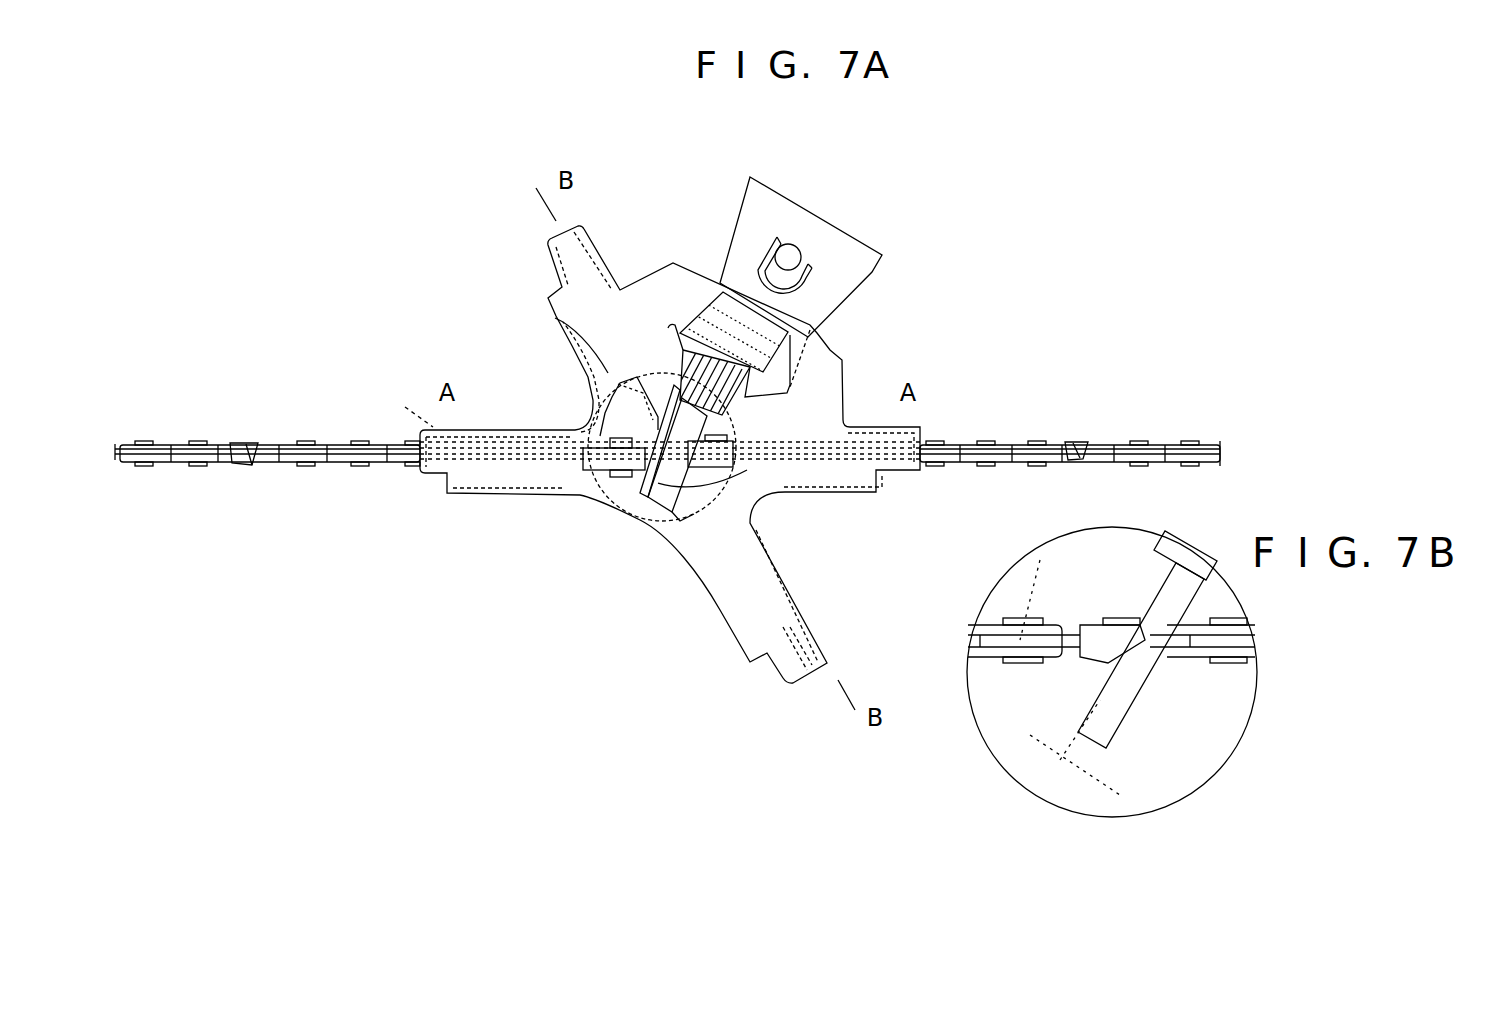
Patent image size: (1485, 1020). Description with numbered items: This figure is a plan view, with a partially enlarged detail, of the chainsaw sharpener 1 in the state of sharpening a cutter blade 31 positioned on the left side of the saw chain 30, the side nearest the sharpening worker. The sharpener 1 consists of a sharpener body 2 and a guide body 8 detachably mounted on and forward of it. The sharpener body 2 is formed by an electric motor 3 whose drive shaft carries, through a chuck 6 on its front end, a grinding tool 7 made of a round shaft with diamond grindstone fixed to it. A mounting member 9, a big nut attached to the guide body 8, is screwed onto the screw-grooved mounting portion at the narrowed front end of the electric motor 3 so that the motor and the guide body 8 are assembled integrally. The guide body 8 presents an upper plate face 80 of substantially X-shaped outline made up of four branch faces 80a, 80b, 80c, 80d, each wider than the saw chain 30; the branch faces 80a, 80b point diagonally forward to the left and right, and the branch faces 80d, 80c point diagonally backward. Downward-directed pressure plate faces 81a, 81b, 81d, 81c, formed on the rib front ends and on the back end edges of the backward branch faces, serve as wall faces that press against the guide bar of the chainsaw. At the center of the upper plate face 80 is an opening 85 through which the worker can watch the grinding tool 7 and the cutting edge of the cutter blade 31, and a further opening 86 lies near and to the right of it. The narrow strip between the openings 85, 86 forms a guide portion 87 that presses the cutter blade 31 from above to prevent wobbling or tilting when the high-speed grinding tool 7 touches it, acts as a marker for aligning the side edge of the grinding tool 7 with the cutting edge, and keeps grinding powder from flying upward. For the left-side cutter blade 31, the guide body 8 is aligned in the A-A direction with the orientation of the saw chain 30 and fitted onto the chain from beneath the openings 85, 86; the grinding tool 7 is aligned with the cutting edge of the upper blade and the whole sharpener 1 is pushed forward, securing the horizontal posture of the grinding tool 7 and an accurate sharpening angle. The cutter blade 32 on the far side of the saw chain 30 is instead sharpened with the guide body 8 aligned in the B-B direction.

In FIG. 7A, the chainsaw sharpener 1 is at (1052, 262).
In FIG. 7A, the sharpener body 2 is at (882, 258).
In FIG. 7A, the electric motor 3 is at (922, 310).
In FIG. 7A, the chuck 6 is at (693, 367).
In FIG. 7A, the grinding tool 7 is at (750, 503).
In FIG. 7B, the grinding tool 7 is at (1143, 690).
In FIG. 7A, the guide body 8 is at (350, 262).
In FIG. 7A, the mounting member 9 is at (702, 312).
In FIG. 7A, the saw chain 30 is at (1132, 440).
In FIG. 7B, the saw chain 30 is at (1111, 640).
In FIG. 7A, the cutter blade 31 is at (238, 440).
In FIG. 7B, the cutter blade 31 is at (1103, 638).
In FIG. 7A, the cutter blade 32 is at (445, 477).
In FIG. 7A, the upper plate face 80 is at (553, 314).
In FIG. 7A, the branch face 80a is at (540, 472).
In FIG. 7A, the branch face 80b is at (748, 615).
In FIG. 7A, the branch face 80c is at (830, 473).
In FIG. 7A, the branch face 80d is at (563, 288).
In FIG. 7A, the pressure plate face 81a is at (432, 426).
In FIG. 7A, the pressure plate face 81b is at (830, 650).
In FIG. 7A, the pressure plate face 81c is at (915, 425).
In FIG. 7A, the pressure plate face 81d is at (575, 245).
In FIG. 7A, the opening 85 is at (683, 500).
In FIG. 7A, the opening 86 is at (600, 452).
In FIG. 7A, the guide portion 87 is at (660, 480).
In FIG. 7B, the guide portion 87 is at (1075, 680).